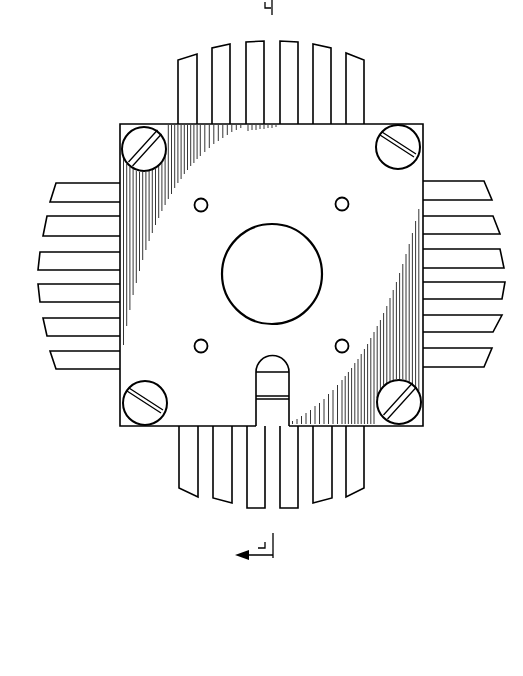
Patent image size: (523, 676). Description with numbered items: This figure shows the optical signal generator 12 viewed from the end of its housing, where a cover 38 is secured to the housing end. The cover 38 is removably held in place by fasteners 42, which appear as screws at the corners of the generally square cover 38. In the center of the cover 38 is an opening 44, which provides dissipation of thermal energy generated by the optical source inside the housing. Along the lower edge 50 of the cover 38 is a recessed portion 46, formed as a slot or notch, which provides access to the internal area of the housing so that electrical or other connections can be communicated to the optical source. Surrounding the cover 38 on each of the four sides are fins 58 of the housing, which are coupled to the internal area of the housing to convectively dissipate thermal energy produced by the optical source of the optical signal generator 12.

The optical signal generator 12 is at (112, 64).
The cover 38 is at (121, 152).
The fasteners 42 is at (123, 401).
The opening 44 is at (324, 275).
The recessed portion 46 is at (281, 405).
The edge 50 is at (368, 427).
The fins 58 is at (322, 43).